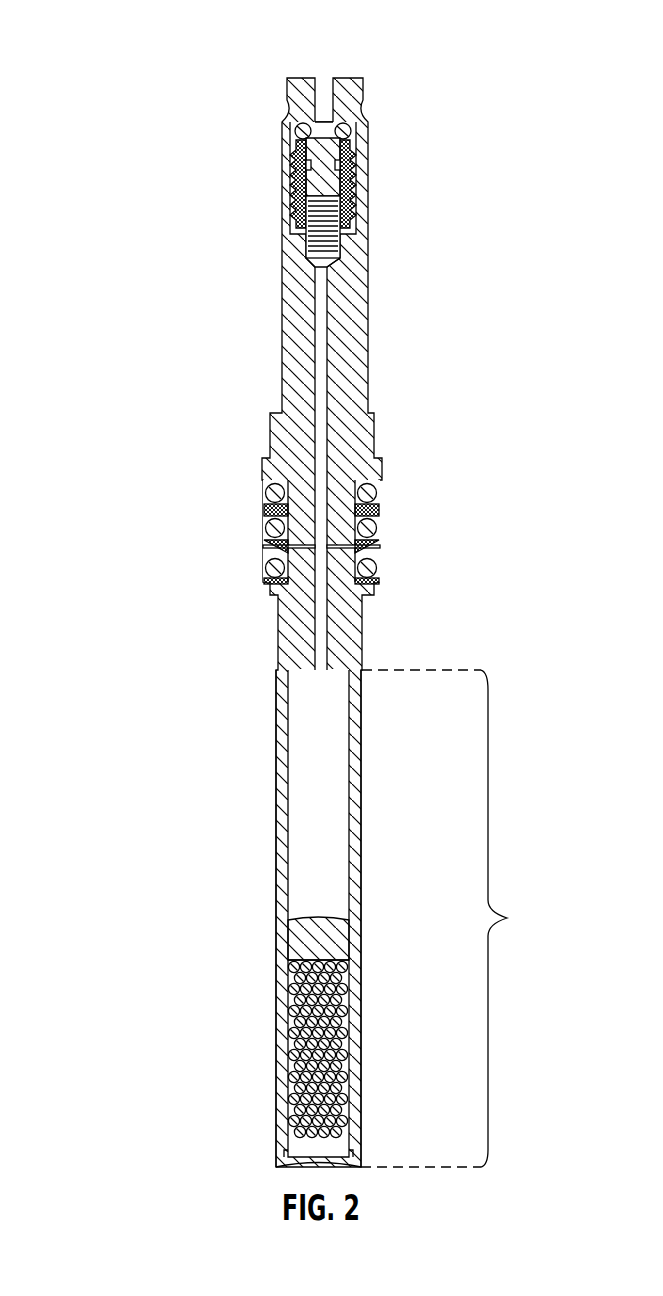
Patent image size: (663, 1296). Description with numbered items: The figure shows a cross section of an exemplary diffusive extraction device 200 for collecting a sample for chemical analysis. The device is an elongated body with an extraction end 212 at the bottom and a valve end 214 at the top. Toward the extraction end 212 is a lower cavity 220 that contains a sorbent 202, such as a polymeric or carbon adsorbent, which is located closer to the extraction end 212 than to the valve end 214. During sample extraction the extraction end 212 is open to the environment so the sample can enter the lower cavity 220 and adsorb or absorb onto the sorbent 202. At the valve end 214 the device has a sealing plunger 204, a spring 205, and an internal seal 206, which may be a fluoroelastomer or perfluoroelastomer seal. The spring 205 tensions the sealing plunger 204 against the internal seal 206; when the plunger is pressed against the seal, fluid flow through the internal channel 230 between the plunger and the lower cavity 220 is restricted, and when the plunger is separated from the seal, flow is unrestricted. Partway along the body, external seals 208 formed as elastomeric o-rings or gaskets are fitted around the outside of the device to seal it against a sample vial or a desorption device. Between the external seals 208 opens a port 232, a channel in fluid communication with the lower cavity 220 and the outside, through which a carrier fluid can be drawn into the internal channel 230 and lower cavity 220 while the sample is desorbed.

The diffusive extraction device 200 is at (118, 33).
The sorbent 202 is at (320, 1000).
The sealing plunger 204 is at (335, 147).
The spring 205 is at (332, 238).
The internal seal 206 is at (355, 118).
The external seals 208 is at (268, 493).
The extraction end 212 is at (273, 1090).
The valve end 214 is at (283, 158).
The lower cavity 220 is at (457, 918).
The internal channel 230 is at (322, 305).
The port 232 is at (272, 548).